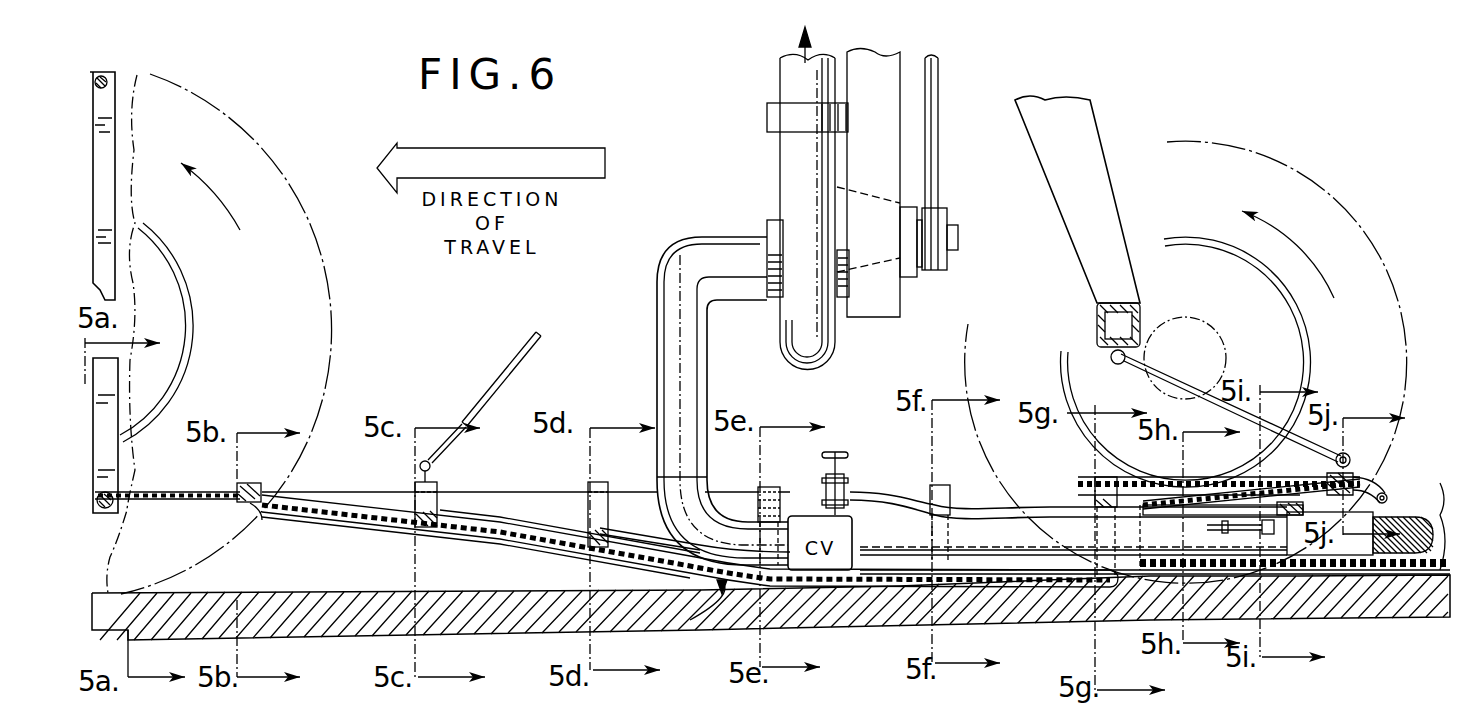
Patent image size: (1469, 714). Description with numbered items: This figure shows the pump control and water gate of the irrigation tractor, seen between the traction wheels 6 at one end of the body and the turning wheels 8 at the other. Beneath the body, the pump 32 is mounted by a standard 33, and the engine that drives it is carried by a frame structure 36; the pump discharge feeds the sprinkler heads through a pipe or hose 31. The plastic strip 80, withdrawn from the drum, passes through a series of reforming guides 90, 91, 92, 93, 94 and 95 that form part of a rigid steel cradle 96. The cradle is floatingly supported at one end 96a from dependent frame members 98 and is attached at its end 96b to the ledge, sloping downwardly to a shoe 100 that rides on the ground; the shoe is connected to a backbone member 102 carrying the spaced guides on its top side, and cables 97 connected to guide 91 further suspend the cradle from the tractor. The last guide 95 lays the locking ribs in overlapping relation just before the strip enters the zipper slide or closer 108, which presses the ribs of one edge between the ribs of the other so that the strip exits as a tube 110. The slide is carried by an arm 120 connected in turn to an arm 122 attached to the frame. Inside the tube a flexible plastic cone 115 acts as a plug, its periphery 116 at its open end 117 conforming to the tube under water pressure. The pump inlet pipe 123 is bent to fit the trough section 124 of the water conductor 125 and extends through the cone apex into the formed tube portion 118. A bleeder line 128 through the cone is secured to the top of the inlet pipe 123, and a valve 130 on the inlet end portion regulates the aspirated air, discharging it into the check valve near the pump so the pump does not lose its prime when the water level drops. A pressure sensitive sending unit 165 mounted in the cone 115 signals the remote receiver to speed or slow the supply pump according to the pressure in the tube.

The traction wheels 6 is at (325, 314).
The turning wheels 8 is at (1355, 240).
The pipe or hose 31 is at (793, 80).
The pump 32 is at (793, 170).
The standard 33 is at (858, 141).
The frame structure 36 is at (938, 128).
The plastic strip 80 is at (370, 492).
The reforming guide 90 is at (262, 490).
The reforming guide 91 is at (437, 470).
The reforming guide 92 is at (604, 482).
The reforming guide 93 is at (768, 487).
The reforming guide 94 is at (938, 485).
The reforming guide 95 is at (1095, 485).
The steel cradle 96 is at (470, 540).
The cradle end 96a is at (115, 505).
The cradle end 96b is at (262, 510).
The cables 97 is at (498, 370).
The dependent frame members 98 is at (103, 157).
The shoe 100 is at (1100, 580).
The backbone member 102 is at (520, 545).
The zipper slide or closer 108 is at (1380, 468).
The tube 110 is at (1442, 480).
The cone 115 is at (1215, 497).
The periphery of the cone 116 is at (1388, 503).
The open end of the cone 117 is at (1295, 555).
The formed tube portion 118 is at (1275, 488).
The arm 120 is at (1195, 360).
The arm 122 is at (1100, 190).
The inlet pipe 123 is at (660, 360).
The trough section 124 is at (640, 537).
The water conductor 125 is at (700, 625).
The bleeder line 128 is at (1055, 514).
The valve 130 is at (848, 490).
The pressure sensitive sending unit 165 is at (1262, 534).